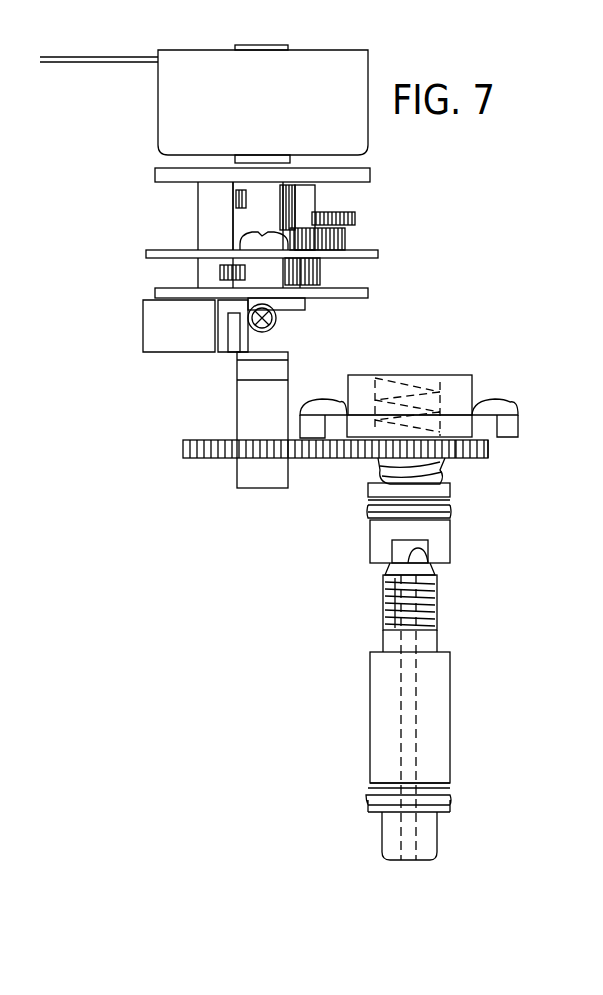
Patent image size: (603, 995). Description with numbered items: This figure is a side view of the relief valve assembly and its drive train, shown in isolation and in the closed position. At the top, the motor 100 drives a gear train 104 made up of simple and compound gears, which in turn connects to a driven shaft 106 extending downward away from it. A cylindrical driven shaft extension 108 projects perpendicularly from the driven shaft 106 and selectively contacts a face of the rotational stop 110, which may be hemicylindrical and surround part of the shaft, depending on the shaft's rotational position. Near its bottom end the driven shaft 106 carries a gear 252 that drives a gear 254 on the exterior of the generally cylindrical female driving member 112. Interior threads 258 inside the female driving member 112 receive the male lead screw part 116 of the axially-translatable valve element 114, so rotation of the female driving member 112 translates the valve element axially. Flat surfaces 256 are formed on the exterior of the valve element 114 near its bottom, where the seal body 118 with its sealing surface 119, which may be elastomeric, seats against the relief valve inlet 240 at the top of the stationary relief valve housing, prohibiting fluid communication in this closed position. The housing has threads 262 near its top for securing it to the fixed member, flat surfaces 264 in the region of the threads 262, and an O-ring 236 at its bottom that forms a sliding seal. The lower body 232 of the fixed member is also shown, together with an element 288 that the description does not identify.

The motor 100 is at (284, 116).
The gear train 104 is at (404, 224).
The driven shaft 106 is at (250, 428).
The driven shaft extension 108 is at (276, 316).
The rotational stop 110 is at (168, 340).
The female driving member 112 is at (460, 390).
The axially-translatable valve element 114 is at (474, 511).
The male lead screw part 116 is at (442, 468).
The seal body 118 is at (445, 548).
The sealing surface 119 is at (410, 577).
The lower body 232 is at (400, 745).
The O-ring 236 is at (452, 790).
The relief valve inlet 240 is at (415, 552).
The gear 252 is at (208, 462).
The gear 254 is at (490, 450).
The flat surfaces 256 is at (400, 553).
The interior threads 258 is at (410, 385).
The threads 262 is at (390, 592).
The flat surfaces 264 is at (437, 635).
The tapered portion 288 is at (392, 570).